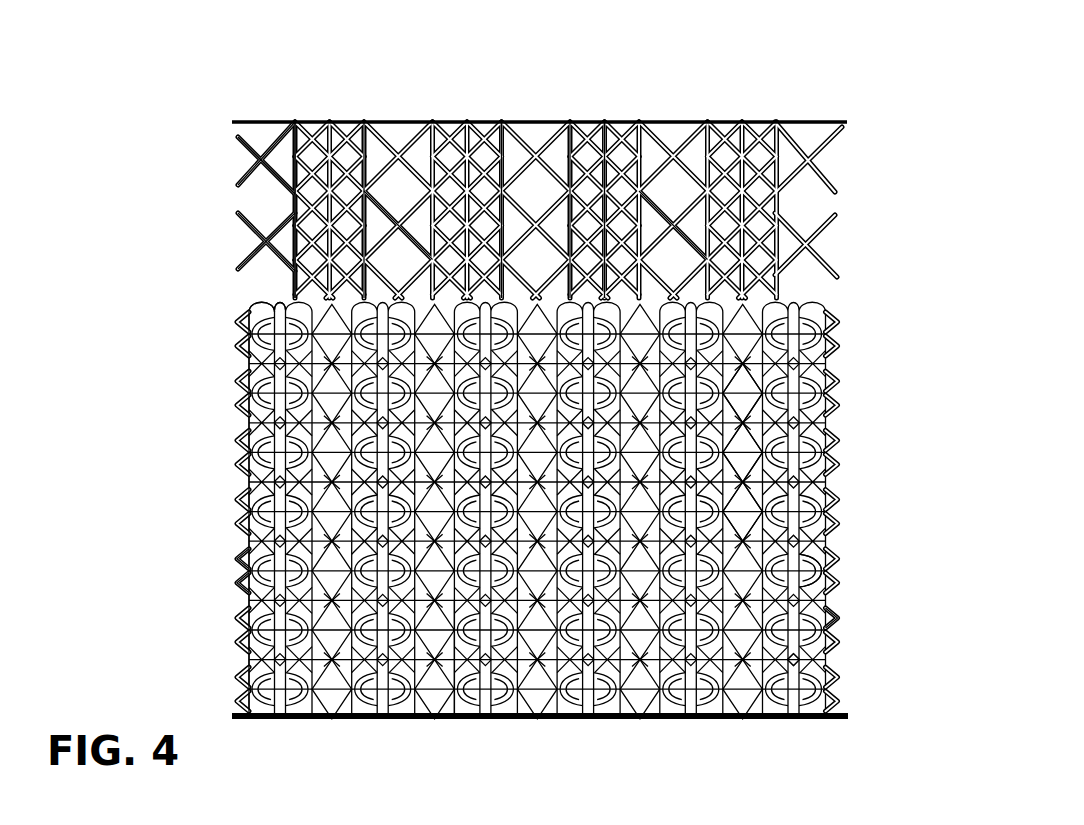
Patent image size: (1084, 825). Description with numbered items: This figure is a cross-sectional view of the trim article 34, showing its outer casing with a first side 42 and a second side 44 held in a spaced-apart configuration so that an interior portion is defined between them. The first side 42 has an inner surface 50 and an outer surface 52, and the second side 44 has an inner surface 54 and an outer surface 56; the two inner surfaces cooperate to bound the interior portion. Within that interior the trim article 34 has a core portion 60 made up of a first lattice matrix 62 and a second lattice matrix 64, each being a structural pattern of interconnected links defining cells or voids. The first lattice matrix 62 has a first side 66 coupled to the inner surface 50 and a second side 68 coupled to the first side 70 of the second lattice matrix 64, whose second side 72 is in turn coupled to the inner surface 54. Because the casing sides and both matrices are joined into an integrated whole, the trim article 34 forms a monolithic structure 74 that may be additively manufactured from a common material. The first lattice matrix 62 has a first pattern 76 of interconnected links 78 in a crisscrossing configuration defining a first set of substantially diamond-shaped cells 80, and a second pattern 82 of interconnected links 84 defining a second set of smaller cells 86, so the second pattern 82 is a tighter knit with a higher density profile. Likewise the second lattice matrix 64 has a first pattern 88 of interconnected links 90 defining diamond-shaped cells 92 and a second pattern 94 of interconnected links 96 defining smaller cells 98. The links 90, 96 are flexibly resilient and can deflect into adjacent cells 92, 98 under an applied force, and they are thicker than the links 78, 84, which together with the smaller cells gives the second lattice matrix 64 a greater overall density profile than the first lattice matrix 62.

The trim article 34 is at (872, 93).
The first side of the outer casing 42 is at (764, 105).
The second side of the outer casing 44 is at (697, 730).
The inner surface 50 is at (828, 135).
The outer surface 52 is at (553, 120).
The inner surface 54 is at (840, 712).
The outer surface 56 is at (820, 720).
The core portion 60 is at (108, 448).
The first lattice matrix 62 is at (216, 218).
The second lattice matrix 64 is at (226, 566).
The first side of the first lattice matrix 66 is at (318, 124).
The second side of the first lattice matrix 68 is at (297, 278).
The first side of the second lattice matrix 70 is at (283, 297).
The second side of the second lattice matrix 72 is at (432, 720).
The monolithic structure 74 is at (124, 345).
The first pattern 76 is at (398, 128).
The interconnected links 78 is at (276, 136).
The first set of cells 80 is at (399, 207).
The second pattern 82 is at (495, 118).
The interconnected links 84 is at (625, 130).
The second set of cells 86 is at (640, 190).
The first pattern 88 is at (742, 393).
The interconnected links 90 is at (748, 455).
The first set of cells 92 is at (748, 513).
The second pattern 94 is at (836, 597).
The interconnected links 96 is at (797, 653).
The second set of cells 98 is at (810, 567).